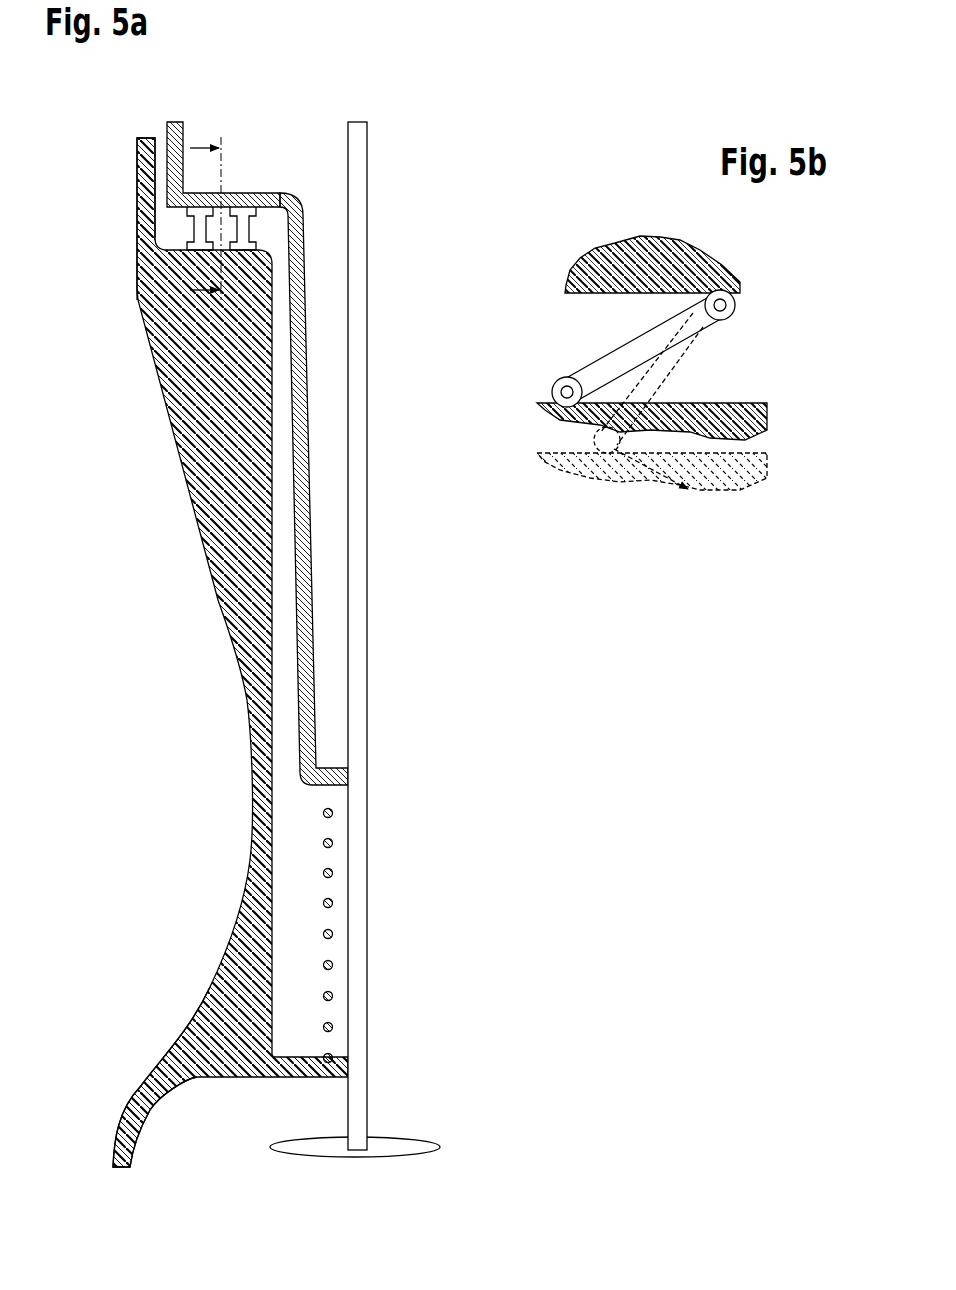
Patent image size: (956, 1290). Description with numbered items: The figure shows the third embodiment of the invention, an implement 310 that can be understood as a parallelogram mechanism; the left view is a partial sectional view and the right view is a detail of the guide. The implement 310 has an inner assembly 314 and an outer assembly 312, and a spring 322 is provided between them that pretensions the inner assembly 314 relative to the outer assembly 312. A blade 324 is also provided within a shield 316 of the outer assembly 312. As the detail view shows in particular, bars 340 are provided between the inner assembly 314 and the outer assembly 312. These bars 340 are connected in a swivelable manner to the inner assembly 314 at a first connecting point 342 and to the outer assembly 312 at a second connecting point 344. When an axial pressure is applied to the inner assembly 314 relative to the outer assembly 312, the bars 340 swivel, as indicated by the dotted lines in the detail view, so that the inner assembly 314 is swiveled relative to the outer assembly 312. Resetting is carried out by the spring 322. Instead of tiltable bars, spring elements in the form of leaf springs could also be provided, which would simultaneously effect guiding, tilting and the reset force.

In FIG. 5a, the implement 310 is at (208, 578).
In FIG. 5a, the outer assembly 312 is at (139, 300).
In FIG. 5a, the inner assembly 314 is at (183, 124).
In FIG. 5a, the shield 316 is at (118, 1133).
In FIG. 5a, the spring 322 is at (322, 900).
In FIG. 5a, the blade 324 is at (411, 1145).
In FIG. 5a, the bars 340 is at (283, 193).
In FIG. 5b, the bars 340 is at (735, 302).
In FIG. 5b, the first connecting point 342 is at (712, 338).
In FIG. 5b, the second connecting point 344 is at (552, 394).